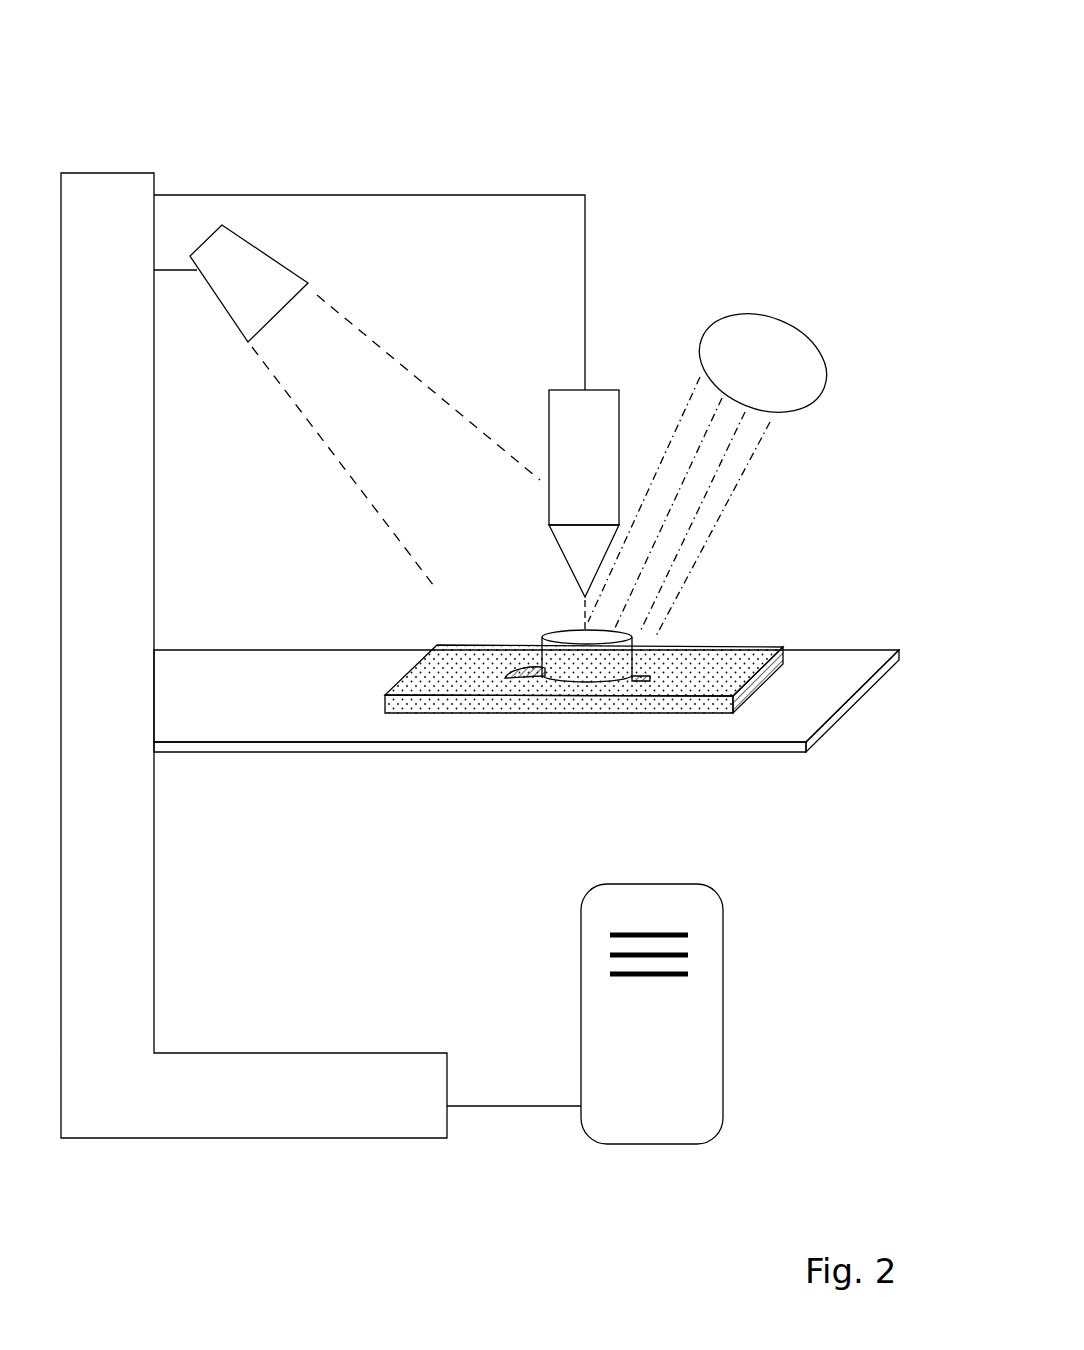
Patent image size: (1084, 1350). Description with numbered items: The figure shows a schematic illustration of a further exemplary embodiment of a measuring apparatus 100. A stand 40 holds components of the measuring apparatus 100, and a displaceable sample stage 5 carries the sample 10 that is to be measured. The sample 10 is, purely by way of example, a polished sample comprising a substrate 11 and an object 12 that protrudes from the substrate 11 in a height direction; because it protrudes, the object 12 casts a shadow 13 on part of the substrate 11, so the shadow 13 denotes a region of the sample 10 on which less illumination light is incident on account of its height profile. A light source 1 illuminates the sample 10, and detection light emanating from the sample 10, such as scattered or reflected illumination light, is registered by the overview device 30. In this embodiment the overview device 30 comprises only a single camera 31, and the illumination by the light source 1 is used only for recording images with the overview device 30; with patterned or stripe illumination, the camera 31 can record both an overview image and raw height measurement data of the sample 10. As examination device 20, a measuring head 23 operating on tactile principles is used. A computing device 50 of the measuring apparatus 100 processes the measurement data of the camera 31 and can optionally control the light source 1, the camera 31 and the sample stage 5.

The measuring apparatus 100 is at (752, 60).
The stand 40 is at (122, 620).
The overview device 30 is at (365, 407).
The camera 31 is at (273, 292).
The examination device 20 is at (612, 453).
The measuring head 23 is at (597, 456).
The light source 1 is at (766, 371).
The sample stage 5 is at (847, 703).
The sample 10 is at (585, 694).
The substrate 11 is at (443, 670).
The object 12 is at (570, 663).
The shadow 13 is at (527, 680).
The computing device 50 is at (664, 1095).